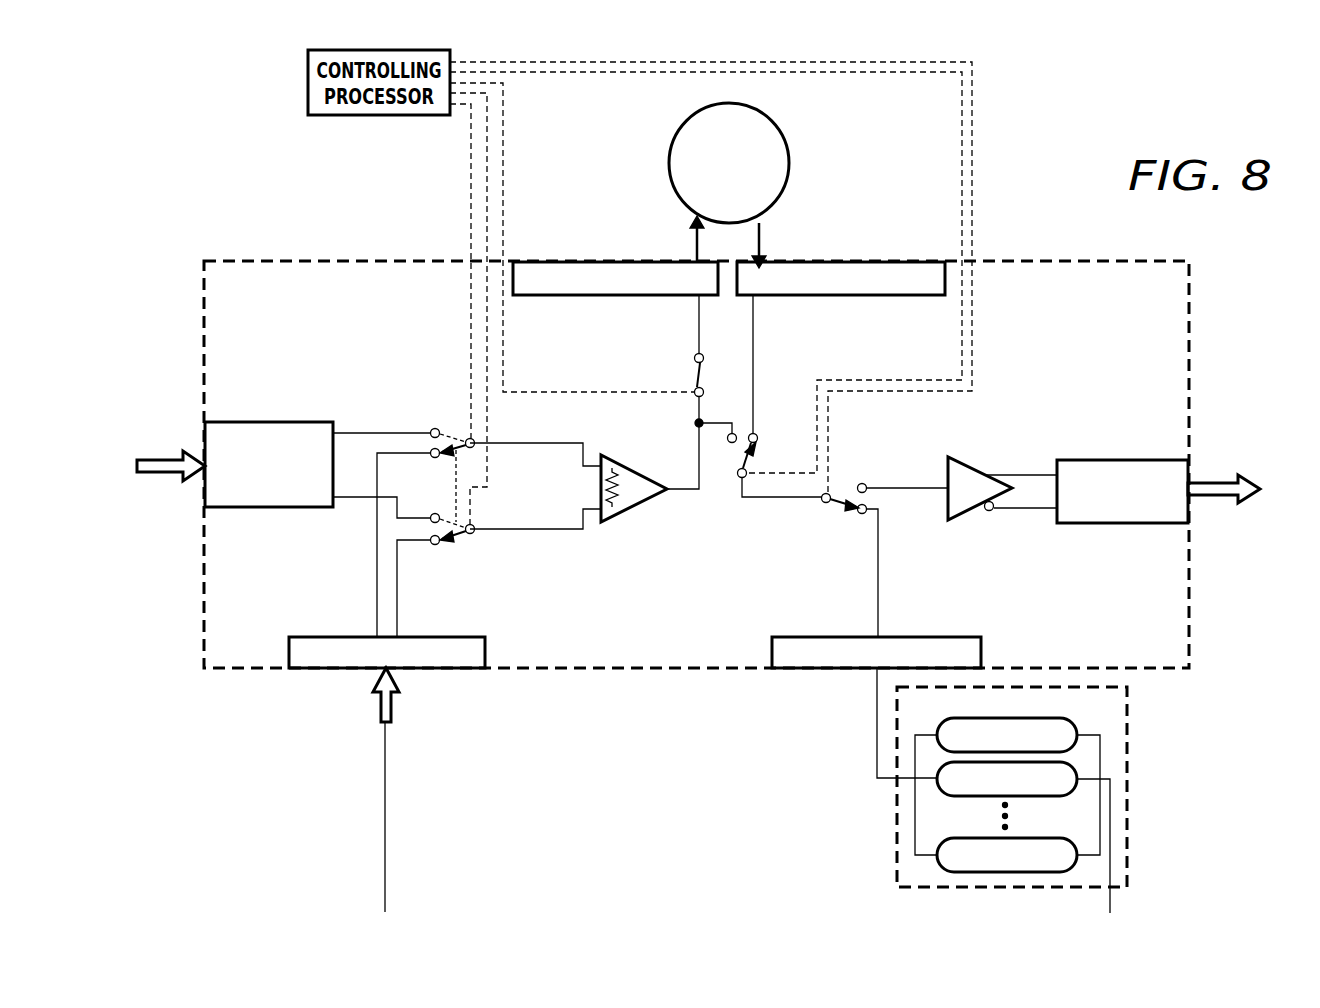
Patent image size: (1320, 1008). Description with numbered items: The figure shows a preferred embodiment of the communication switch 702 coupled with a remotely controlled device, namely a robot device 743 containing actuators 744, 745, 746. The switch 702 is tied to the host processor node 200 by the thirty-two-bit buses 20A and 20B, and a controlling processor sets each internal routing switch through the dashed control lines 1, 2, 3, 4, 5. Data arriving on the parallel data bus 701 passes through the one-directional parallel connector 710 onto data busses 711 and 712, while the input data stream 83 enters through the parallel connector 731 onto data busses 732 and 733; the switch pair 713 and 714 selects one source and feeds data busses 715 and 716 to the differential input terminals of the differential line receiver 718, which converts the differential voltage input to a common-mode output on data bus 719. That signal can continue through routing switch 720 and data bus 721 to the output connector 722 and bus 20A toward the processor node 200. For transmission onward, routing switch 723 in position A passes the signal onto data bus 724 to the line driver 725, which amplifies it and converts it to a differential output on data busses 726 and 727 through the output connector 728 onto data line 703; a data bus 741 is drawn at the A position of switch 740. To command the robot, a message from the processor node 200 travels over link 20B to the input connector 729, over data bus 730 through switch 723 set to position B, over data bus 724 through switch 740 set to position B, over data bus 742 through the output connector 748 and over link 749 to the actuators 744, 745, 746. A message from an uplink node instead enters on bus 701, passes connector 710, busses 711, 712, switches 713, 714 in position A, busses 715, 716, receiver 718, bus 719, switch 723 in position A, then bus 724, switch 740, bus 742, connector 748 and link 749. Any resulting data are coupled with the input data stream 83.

The control line 1 is at (471, 175).
The control line 2 is at (487, 190).
The control line 3 is at (503, 167).
The control line 4 is at (962, 150).
The control line 5 is at (972, 150).
The processor node 200 is at (669, 165).
The 32-bit parallel data bus 20A is at (679, 239).
The 32-bit parallel data bus 20B is at (778, 245).
The communication switch 702 is at (204, 295).
The 32-bit parallel data bus 701 is at (162, 456).
The 32-bit parallel data line 703 is at (1210, 480).
The input data stream 83 is at (378, 710).
The one directional 32 bit parallel connector 710 is at (274, 508).
The 32-bit parallel data bus 711 is at (351, 434).
The 32-bit parallel data bus 712 is at (346, 498).
The routing switch 713 is at (446, 434).
The routing switch 714 is at (468, 534).
The 32-bit parallel data bus 715 is at (580, 448).
The 32-bit parallel data bus 716 is at (584, 532).
The differential line receiver 718 is at (628, 518).
The 32-bit parallel data bus 719 is at (692, 489).
The routing switch 720 is at (692, 379).
The 32-bit parallel data bus 721 is at (696, 344).
The one directional output connector 722 is at (566, 296).
The routing switch 723 is at (736, 474).
The 32-bit parallel data bus 724 is at (762, 503).
The line driver 725 is at (982, 512).
The 32 bit data bus 726 is at (1036, 472).
The 32 bit data bus 727 is at (1032, 514).
The one directional output connector 728 is at (1130, 458).
The input connector 729 is at (874, 297).
The data bus 730 is at (753, 345).
The one directional 32 bit parallel connector 731 is at (486, 654).
The 32-bit parallel data bus 732 is at (369, 604).
The 32-bit parallel data bus 733 is at (403, 604).
The switch 740 is at (828, 507).
The data bus 741 is at (898, 486).
The data bus 742 is at (879, 604).
The robot device 743 is at (896, 824).
The actuator 744 is at (1080, 726).
The actuator 745 is at (990, 800).
The actuator 746 is at (985, 883).
The output connector 748 is at (802, 637).
The link 749 is at (874, 706).